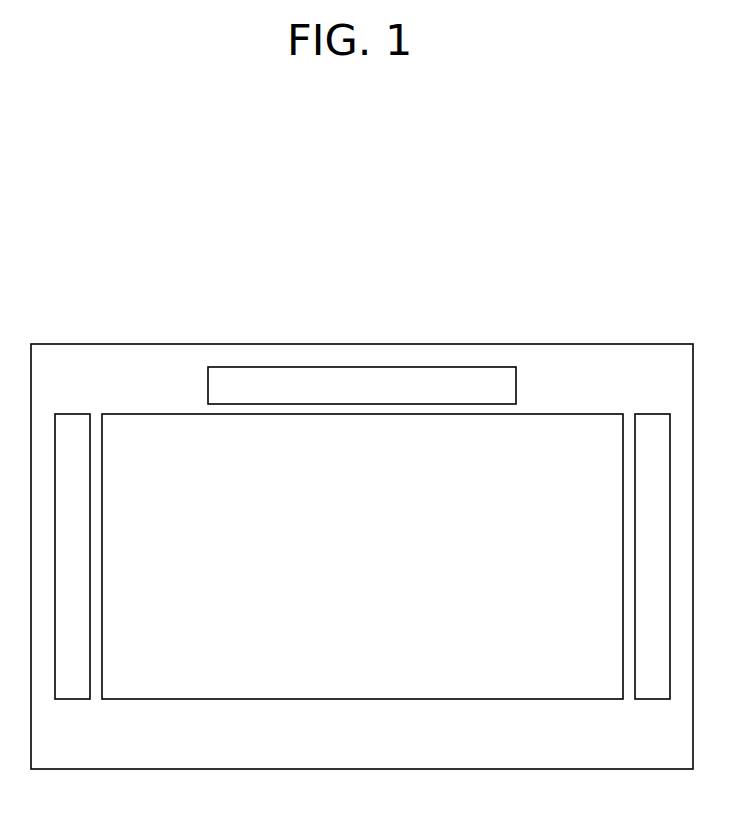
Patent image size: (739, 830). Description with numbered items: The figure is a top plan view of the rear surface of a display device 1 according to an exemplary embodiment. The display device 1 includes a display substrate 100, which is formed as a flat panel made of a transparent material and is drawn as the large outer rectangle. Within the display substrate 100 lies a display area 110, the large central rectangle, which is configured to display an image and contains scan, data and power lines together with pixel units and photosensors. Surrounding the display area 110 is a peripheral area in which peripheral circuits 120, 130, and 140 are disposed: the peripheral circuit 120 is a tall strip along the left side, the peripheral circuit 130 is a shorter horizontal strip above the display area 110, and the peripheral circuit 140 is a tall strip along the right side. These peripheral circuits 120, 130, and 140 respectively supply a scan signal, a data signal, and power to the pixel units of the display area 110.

The display device 1 is at (570, 296).
The display substrate 100 is at (215, 343).
The display area 110 is at (158, 428).
The peripheral circuit 120 is at (70, 414).
The peripheral circuit 130 is at (353, 381).
The peripheral circuit 140 is at (650, 414).